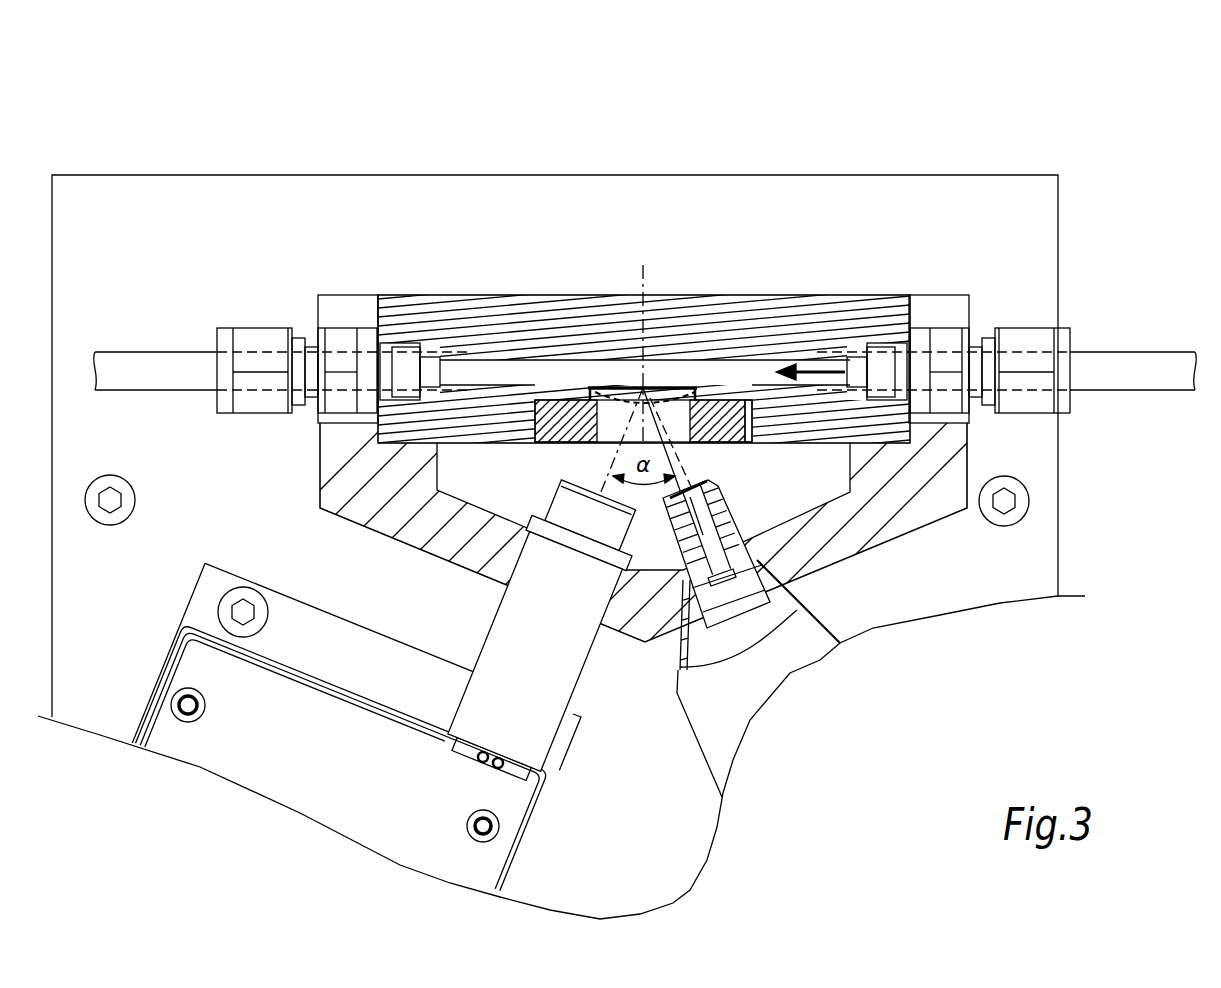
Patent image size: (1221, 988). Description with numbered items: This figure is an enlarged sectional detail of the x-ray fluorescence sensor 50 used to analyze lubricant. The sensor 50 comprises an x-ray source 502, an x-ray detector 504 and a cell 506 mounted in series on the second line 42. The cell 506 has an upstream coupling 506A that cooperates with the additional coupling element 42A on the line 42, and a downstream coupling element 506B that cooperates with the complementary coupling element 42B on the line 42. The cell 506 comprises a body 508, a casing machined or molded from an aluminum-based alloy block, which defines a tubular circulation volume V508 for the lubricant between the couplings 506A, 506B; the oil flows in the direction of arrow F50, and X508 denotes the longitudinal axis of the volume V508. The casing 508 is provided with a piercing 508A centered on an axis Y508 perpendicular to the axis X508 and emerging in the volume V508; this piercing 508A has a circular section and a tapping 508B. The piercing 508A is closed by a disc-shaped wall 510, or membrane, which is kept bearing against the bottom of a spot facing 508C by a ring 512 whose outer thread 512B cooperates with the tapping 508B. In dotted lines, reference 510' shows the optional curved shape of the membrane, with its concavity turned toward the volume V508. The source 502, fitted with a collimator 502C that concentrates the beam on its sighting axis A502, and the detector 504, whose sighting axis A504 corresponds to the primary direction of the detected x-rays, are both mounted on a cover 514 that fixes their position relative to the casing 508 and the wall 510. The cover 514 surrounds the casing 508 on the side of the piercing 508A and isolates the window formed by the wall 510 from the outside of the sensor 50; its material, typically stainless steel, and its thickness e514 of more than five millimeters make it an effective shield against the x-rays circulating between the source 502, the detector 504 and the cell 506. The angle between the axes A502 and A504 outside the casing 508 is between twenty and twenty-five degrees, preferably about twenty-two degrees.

The sensor 50 is at (1062, 85).
The second line 42 is at (145, 365).
The additional coupling element 42A is at (1023, 345).
The complementary coupling element 42B is at (258, 340).
The x-ray source 502 is at (750, 683).
The collimator 502C is at (688, 564).
The x-ray detector 504 is at (356, 726).
The cell 506 is at (683, 243).
The upstream coupling 506A is at (952, 340).
The downstream coupling element 506B is at (345, 400).
The body 508 is at (510, 297).
The piercing 508A is at (610, 432).
The tapping 508B is at (770, 396).
The spot facing 508C is at (590, 405).
The disc-shaped wall 510 is at (590, 295).
The curved membrane 510' is at (741, 309).
The ring 512 is at (697, 392).
The outer thread 512B is at (745, 540).
The cover 514 is at (870, 560).
The longitudinal axis X508 is at (458, 362).
The axis of the piercing Y508 is at (646, 333).
The circulation volume V508 is at (528, 372).
The flow direction arrow F50 is at (792, 372).
The sighting axis of the source A502 is at (640, 388).
The sighting axis of the detector A504 is at (647, 388).
The thickness of the cover e514 is at (471, 510).